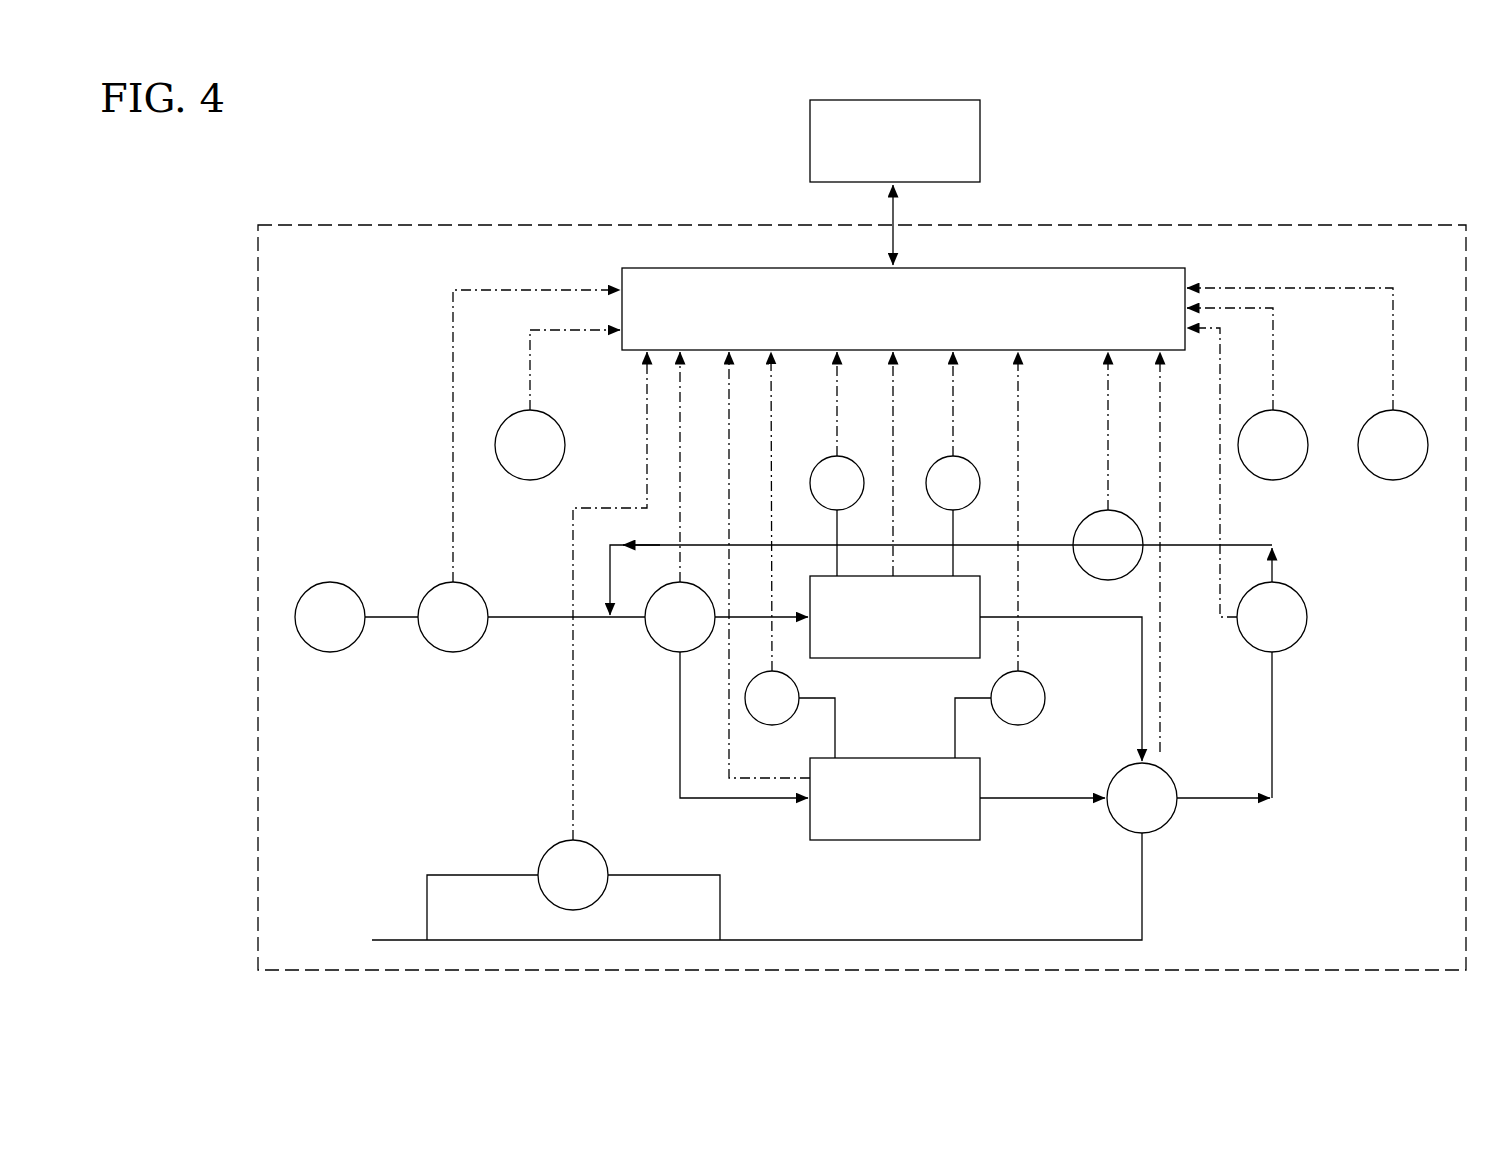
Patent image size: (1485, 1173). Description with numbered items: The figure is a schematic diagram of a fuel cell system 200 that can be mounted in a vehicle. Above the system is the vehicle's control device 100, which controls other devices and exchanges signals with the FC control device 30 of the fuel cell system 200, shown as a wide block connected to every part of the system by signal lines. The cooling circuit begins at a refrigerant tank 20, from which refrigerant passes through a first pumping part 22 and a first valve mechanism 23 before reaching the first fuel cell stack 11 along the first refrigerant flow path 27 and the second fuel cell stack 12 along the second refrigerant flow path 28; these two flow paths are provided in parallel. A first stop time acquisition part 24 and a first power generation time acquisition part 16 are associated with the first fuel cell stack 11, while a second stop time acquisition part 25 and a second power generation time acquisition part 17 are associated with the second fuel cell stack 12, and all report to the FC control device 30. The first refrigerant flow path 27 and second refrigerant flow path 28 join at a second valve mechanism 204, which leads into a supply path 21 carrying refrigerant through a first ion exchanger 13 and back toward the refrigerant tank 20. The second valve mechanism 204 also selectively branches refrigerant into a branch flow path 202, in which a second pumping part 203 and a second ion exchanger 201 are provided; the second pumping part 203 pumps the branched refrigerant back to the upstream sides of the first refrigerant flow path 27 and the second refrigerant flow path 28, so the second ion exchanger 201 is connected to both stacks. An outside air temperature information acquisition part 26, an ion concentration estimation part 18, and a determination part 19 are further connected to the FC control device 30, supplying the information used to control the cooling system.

The fuel cell system 200 is at (348, 186).
The control device 100 is at (808, 140).
The FC control device 30 is at (1180, 268).
The refrigerant tank 20 is at (330, 582).
The first pumping part 22 is at (472, 590).
The first valve mechanism 23 is at (664, 648).
The outside air temperature information acquisition part 26 is at (566, 445).
The first stop time acquisition part 24 is at (830, 457).
The first power generation time acquisition part 16 is at (960, 457).
The second ion exchanger 201 is at (1094, 512).
The ion concentration estimation part 18 is at (1283, 479).
The determination part 19 is at (1393, 480).
The second pumping part 203 is at (1308, 617).
The first fuel cell stack 11 is at (893, 660).
The second fuel cell stack 12 is at (893, 842).
The second stop time acquisition part 25 is at (772, 726).
The second power generation time acquisition part 17 is at (1046, 698).
The first refrigerant flow path 27 is at (1067, 614).
The second valve mechanism 204 is at (1166, 776).
The second refrigerant flow path 28 is at (1043, 801).
The branch flow path 202 is at (1225, 801).
The supply path 21 is at (1145, 902).
The first ion exchanger 13 is at (592, 846).